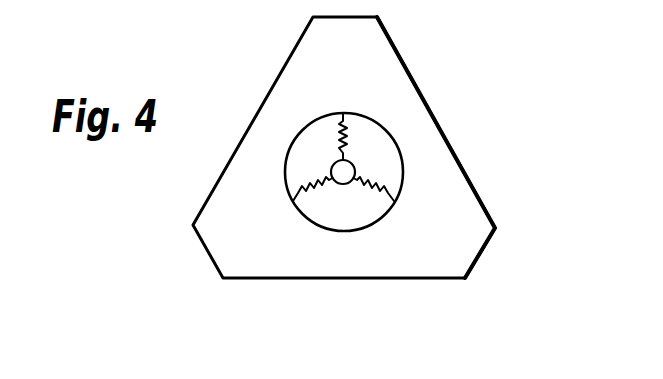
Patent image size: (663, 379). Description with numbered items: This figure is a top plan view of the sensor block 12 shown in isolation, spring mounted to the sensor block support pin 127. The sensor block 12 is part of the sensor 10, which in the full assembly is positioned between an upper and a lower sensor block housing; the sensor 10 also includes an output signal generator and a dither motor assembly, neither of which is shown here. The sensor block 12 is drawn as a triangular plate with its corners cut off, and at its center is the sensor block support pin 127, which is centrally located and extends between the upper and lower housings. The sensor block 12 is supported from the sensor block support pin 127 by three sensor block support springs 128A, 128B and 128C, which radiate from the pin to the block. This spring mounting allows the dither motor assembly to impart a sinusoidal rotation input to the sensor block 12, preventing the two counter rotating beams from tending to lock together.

The sensor 10 is at (370, 147).
The sensor block 12 is at (390, 85).
The sensor block support pin 127 is at (345, 171).
The sensor block support spring 128A is at (315, 193).
The sensor block support spring 128B is at (371, 189).
The sensor block support spring 128C is at (339, 150).